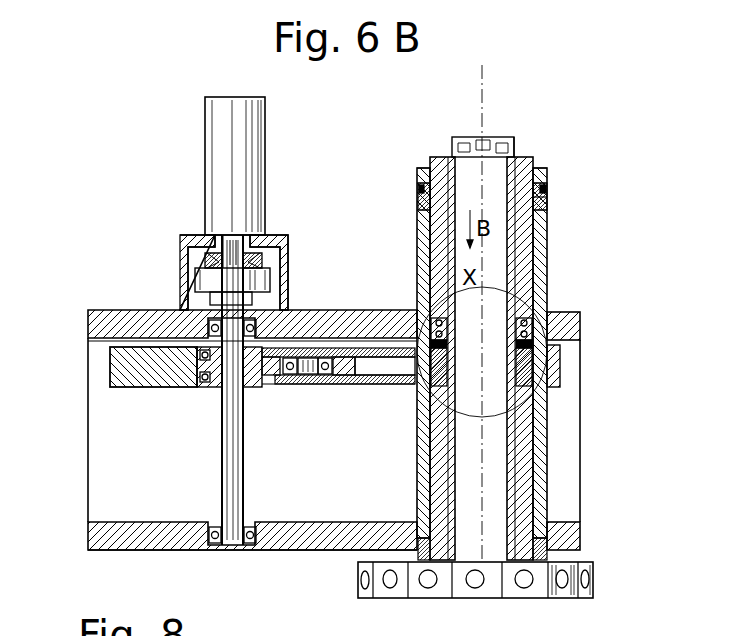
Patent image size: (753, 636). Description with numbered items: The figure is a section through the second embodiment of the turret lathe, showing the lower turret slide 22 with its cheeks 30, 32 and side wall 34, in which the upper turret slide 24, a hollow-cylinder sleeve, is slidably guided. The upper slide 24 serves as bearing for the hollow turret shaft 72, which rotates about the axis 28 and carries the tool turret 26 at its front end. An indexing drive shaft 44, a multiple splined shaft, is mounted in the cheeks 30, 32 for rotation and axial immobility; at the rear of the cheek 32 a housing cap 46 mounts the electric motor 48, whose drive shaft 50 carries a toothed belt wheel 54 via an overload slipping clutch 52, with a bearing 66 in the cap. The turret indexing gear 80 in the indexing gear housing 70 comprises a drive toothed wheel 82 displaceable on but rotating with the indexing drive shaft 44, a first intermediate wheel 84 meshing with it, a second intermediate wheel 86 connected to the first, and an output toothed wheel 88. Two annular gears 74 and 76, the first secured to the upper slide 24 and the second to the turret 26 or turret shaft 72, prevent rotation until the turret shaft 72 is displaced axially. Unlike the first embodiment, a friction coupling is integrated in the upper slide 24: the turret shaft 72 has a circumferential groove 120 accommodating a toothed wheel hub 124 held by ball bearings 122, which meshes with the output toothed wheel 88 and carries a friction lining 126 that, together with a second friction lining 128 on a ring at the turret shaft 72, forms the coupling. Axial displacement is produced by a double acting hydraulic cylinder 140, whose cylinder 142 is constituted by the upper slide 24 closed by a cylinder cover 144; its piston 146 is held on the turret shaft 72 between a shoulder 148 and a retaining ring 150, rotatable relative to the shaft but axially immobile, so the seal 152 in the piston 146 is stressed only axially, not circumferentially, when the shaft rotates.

The lower turret slide 22 is at (274, 553).
The upper turret slide 24 is at (538, 440).
The tool turret 26 is at (445, 598).
The axis 28 is at (484, 83).
The cheek 30 is at (105, 530).
The cheek 32 is at (108, 330).
The side wall 34 is at (100, 422).
The indexing drive shaft 44 is at (222, 470).
The housing cap 46 is at (288, 275).
The electric motor 48 is at (212, 124).
The drive shaft 50 is at (232, 242).
The overload slipping clutch 52 is at (205, 256).
The toothed belt wheel 54 is at (264, 262).
The bearing 66 is at (208, 278).
The indexing gear housing 70 is at (130, 365).
The turret shaft 72 is at (522, 245).
The annular gear 74 is at (550, 528).
The annular gear 76 is at (548, 552).
The turret indexing gear 80 is at (342, 392).
The drive toothed wheel 82 is at (200, 378).
The first intermediate wheel 84 is at (327, 348).
The second intermediate wheel 86 is at (300, 386).
The output toothed wheel 88 is at (382, 386).
The circumferential groove 120 is at (530, 390).
The ball bearings 122 is at (553, 350).
The toothed wheel hub 124 is at (552, 378).
The friction lining 126 is at (555, 330).
The friction lining 128 is at (527, 346).
The double acting hydraulic cylinder 140 is at (412, 190).
The cylinder 142 is at (420, 200).
The cylinder cover 144 is at (548, 175).
The piston 146 is at (443, 195).
The shoulder 148 is at (530, 185).
The retaining ring 150 is at (548, 205).
The seal 152 is at (545, 195).